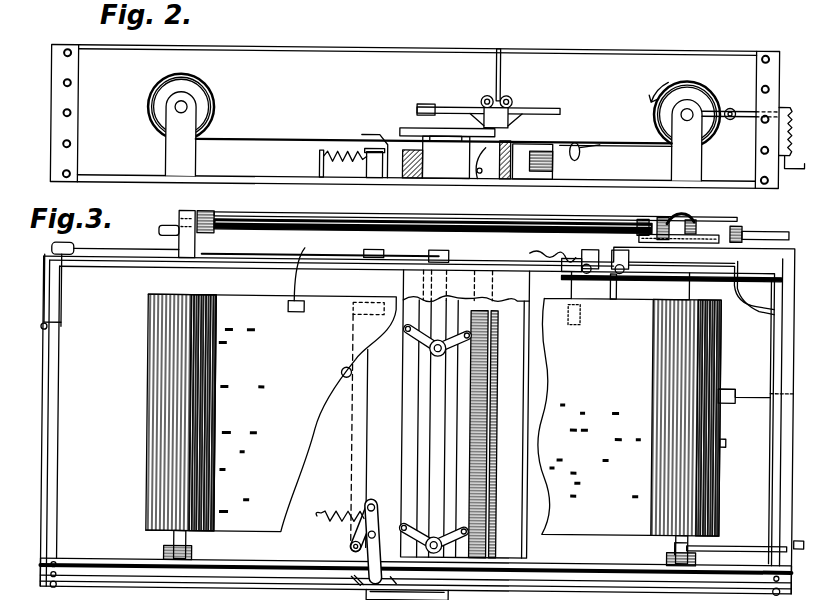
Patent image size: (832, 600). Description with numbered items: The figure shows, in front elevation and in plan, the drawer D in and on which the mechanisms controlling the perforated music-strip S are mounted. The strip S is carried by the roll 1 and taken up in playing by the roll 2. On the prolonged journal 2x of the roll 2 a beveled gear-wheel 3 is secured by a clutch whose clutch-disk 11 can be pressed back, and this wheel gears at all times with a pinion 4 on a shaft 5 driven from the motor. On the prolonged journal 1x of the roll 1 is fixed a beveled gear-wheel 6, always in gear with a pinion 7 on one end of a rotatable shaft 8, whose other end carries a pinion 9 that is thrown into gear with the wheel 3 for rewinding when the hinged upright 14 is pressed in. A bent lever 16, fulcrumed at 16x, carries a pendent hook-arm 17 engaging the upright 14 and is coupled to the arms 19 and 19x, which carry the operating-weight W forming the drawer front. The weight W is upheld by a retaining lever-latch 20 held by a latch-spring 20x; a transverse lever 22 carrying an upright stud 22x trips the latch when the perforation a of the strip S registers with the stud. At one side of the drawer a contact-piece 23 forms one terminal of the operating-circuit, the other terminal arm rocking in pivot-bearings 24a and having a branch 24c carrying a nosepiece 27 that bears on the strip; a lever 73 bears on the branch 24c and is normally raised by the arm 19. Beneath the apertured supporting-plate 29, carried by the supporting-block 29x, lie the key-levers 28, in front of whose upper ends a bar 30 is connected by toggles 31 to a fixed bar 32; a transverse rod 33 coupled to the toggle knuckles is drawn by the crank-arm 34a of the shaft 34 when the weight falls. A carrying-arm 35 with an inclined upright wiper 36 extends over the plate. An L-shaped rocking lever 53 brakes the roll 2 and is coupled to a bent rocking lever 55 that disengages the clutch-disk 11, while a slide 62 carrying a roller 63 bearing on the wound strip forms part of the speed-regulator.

In FIG. 2, the roll 1 is at (190, 78).
In FIG. 3, the roll 1 is at (215, 447).
In FIG. 2, the prolonged journal 1x is at (178, 111).
In FIG. 3, the prolonged journal 1x is at (177, 245).
In FIG. 2, the roll 2 is at (698, 88).
In FIG. 3, the roll 2 is at (721, 438).
In FIG. 2, the prolonged journal 2x is at (706, 142).
In FIG. 3, the prolonged journal 2x is at (690, 217).
In FIG. 3, the beveled gear-wheel 3 is at (754, 287).
In FIG. 3, the pinion 4 is at (736, 223).
In FIG. 3, the shaft 5 is at (780, 228).
In FIG. 3, the beveled gear-wheel 6 is at (165, 228).
In FIG. 3, the pinion 7 is at (203, 213).
In FIG. 3, the rotatable shaft 8 is at (470, 221).
In FIG. 3, the pinion 9 is at (641, 217).
In FIG. 3, the clutch-disk 11 is at (678, 212).
In FIG. 3, the upright 14 is at (660, 215).
In FIG. 3, the lever 16 is at (701, 272).
In FIG. 3, the fulcrum 16x is at (620, 302).
In FIG. 3, the pendent hook-arm 17 is at (628, 258).
In FIG. 3, the arm 19 is at (722, 402).
In FIG. 3, the arm 19x is at (50, 437).
In FIG. 2, the retaining lever-latch 20 is at (376, 180).
In FIG. 3, the retaining lever-latch 20 is at (380, 512).
In FIG. 2, the latch-spring 20x is at (320, 160).
In FIG. 3, the latch-spring 20x is at (321, 512).
In FIG. 3, the lever 22 is at (351, 430).
In FIG. 2, the upright stud 22x is at (362, 135).
In FIG. 3, the upright stud 22x is at (350, 312).
In FIG. 2, the contact-piece 23 is at (545, 180).
In FIG. 3, the pivot-bearings 24a is at (531, 250).
In FIG. 3, the branch 24c is at (660, 287).
In FIG. 2, the nosepiece 27 is at (581, 152).
In FIG. 3, the nosepiece 27 is at (581, 323).
In FIG. 2, the key-levers 28 is at (484, 180).
In FIG. 3, the key-levers 28 is at (497, 445).
In FIG. 3, the supporting-plate 29 is at (466, 286).
In FIG. 2, the supporting-block 29x is at (512, 180).
In FIG. 3, the supporting-block 29x is at (527, 492).
In FIG. 2, the bar 30 is at (445, 157).
In FIG. 3, the bar 30 is at (458, 428).
In FIG. 2, the toggles 31 is at (445, 130).
In FIG. 3, the toggles 31 is at (428, 345).
In FIG. 3, the fixed bar 32 is at (459, 414).
In FIG. 2, the transverse rod 33 is at (430, 180).
In FIG. 3, the transverse rod 33 is at (430, 428).
In FIG. 3, the shaft 34 is at (262, 234).
In FIG. 3, the crank-arm 34a is at (430, 253).
In FIG. 2, the carrying-arm 35 is at (525, 110).
In FIG. 2, the inclined upright wiper 36 is at (502, 84).
In FIG. 3, the L-shaped rocking lever 53 is at (680, 545).
In FIG. 3, the bent rocking lever 55 is at (800, 545).
In FIG. 2, the slide 62 is at (787, 107).
In FIG. 3, the slide 62 is at (748, 388).
In FIG. 2, the roller 63 is at (731, 105).
In FIG. 3, the roller 63 is at (727, 440).
In FIG. 2, the lever 73 is at (640, 144).
In FIG. 3, the lever 73 is at (630, 286).
In FIG. 2, the drawer D is at (470, 48).
In FIG. 3, the drawer D is at (135, 272).
In FIG. 2, the music-strip S is at (578, 147).
In FIG. 3, the music-strip S is at (228, 330).
In FIG. 3, the operating-weight W is at (274, 562).
In FIG. 3, the perforation a is at (336, 273).